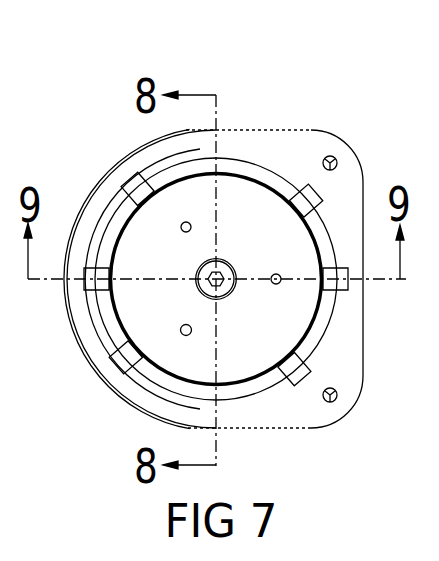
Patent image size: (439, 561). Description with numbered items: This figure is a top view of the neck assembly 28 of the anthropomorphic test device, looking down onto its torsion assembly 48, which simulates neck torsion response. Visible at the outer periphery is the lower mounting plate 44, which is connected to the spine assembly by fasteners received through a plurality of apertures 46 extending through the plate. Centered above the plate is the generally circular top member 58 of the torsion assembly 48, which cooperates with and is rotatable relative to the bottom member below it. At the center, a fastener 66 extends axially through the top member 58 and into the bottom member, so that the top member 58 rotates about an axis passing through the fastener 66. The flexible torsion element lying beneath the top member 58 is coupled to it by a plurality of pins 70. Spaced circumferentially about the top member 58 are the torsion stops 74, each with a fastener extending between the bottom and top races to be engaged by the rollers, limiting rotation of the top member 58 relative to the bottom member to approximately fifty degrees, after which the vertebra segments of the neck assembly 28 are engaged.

The neck assembly 28 is at (213, 223).
The lower mounting plate 44 is at (293, 143).
The apertures 46 is at (330, 158).
The torsion assembly 48 is at (265, 163).
The top member 58 is at (193, 195).
The fastener 66 is at (226, 290).
The pins 70 is at (181, 226).
The torsion stops 74 is at (138, 183).